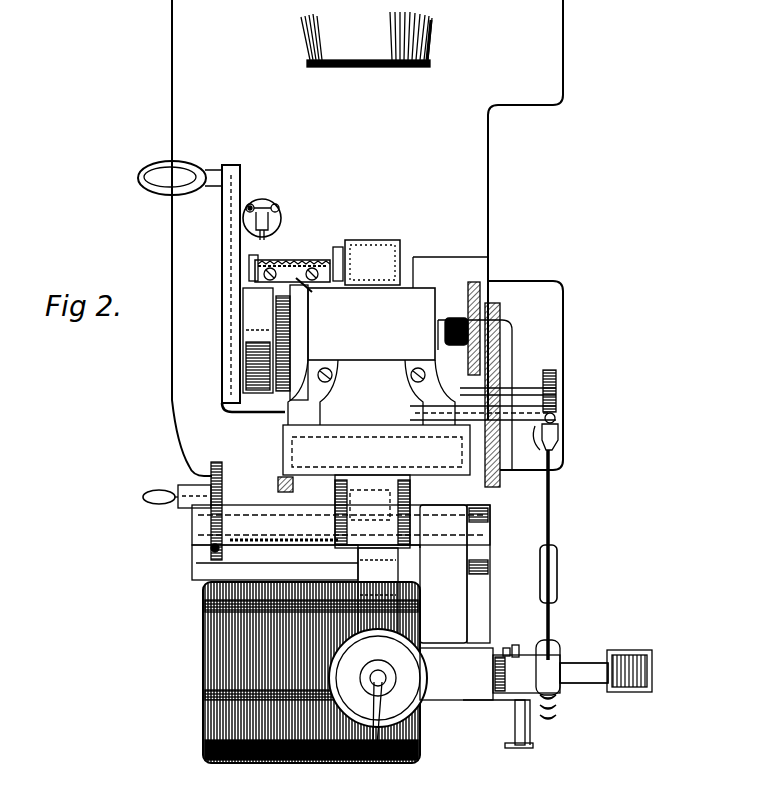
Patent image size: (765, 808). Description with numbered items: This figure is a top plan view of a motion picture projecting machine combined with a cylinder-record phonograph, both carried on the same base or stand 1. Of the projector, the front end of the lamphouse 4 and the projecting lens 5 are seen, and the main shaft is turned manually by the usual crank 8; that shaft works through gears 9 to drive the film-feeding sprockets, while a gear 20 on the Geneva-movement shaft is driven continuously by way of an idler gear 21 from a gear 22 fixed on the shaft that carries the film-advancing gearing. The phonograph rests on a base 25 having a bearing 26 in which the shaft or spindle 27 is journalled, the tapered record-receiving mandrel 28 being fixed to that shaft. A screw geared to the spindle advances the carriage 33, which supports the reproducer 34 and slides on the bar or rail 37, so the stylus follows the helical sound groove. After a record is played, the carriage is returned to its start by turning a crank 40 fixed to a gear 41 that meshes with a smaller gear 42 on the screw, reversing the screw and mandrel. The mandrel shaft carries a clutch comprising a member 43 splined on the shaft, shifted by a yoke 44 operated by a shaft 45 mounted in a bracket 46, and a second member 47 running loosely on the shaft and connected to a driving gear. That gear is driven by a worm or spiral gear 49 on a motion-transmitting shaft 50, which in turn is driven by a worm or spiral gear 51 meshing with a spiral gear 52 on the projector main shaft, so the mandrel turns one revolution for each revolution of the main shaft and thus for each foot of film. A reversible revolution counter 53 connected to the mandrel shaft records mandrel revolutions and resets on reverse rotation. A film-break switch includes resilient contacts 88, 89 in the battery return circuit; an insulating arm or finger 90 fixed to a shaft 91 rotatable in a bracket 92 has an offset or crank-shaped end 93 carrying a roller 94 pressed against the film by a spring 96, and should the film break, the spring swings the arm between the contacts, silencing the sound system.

The base or stand 1 is at (487, 212).
The lamphouse front end 4 is at (366, 39).
The projecting lens 5 is at (410, 545).
The crank 8 is at (222, 250).
The gears 9 is at (490, 335).
The gear 20 is at (308, 310).
The idler gear 21 is at (290, 352).
The gear 22 is at (278, 488).
The base 25 is at (455, 574).
The bearing 26 is at (514, 674).
The shaft or spindle 27 is at (590, 660).
The record-receiving mandrel 28 is at (420, 740).
The carriage 33 is at (378, 590).
The reproducer 34 is at (420, 700).
The bar or rail 37 is at (195, 538).
The crank 40 is at (150, 505).
The gear 41 is at (215, 462).
The gear 42 is at (219, 549).
The clutch member 43 is at (516, 645).
The clutch-shifting yoke 44 is at (501, 641).
The shaft 45 is at (505, 712).
The bracket 46 is at (513, 730).
The clutch member 47 is at (555, 640).
The worm or spiral gear 49 is at (540, 712).
The motion-transmitting shaft 50 is at (552, 520).
The worm or spiral gear 51 is at (560, 442).
The spiral gear 52 is at (556, 395).
The revolution counter 53 is at (632, 650).
The contact 88 is at (278, 214).
The contact 89 is at (252, 206).
The arm or finger 90 is at (258, 250).
The shaft 91 is at (316, 262).
The bracket 92 is at (285, 264).
The offset or crank-shaped end 93 is at (338, 247).
The roller 94 is at (395, 243).
The spring 96 is at (315, 293).